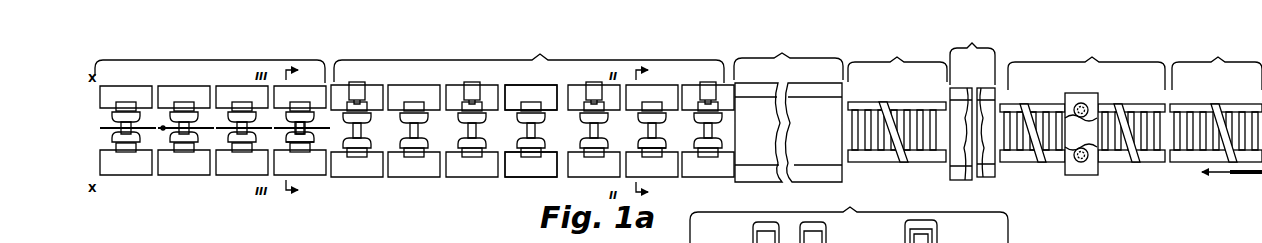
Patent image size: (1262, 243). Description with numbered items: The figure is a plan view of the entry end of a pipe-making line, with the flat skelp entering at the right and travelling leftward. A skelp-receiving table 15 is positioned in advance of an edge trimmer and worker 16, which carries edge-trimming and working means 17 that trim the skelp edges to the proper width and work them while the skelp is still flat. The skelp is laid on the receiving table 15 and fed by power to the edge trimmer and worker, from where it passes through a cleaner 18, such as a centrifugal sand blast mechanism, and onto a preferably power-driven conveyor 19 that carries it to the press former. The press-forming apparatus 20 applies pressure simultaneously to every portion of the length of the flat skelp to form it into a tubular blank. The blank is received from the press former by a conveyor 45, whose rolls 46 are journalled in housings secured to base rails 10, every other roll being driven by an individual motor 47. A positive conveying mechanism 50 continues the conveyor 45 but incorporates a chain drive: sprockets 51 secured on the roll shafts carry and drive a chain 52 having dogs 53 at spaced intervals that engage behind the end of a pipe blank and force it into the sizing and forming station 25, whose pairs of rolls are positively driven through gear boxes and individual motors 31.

The positive conveying mechanism 50 is at (215, 52).
The dogs 53 is at (163, 130).
The chain 52 is at (223, 130).
The sprockets 51 is at (295, 128).
The rolls 46 is at (311, 141).
The conveyor 45 is at (624, 54).
The individual motor 47 is at (359, 85).
The rails 10 is at (535, 92).
The edge trimmer and worker 16 is at (541, 175).
The press-forming apparatus 20 is at (821, 117).
The conveyor 19 is at (906, 104).
The cleaner 18 is at (977, 89).
The edge-trimming and working means 17 is at (1066, 88).
The skelp-receiving table 15 is at (1220, 104).
The sizing and forming station 25 is at (990, 214).
The individual motors 31 is at (826, 242).